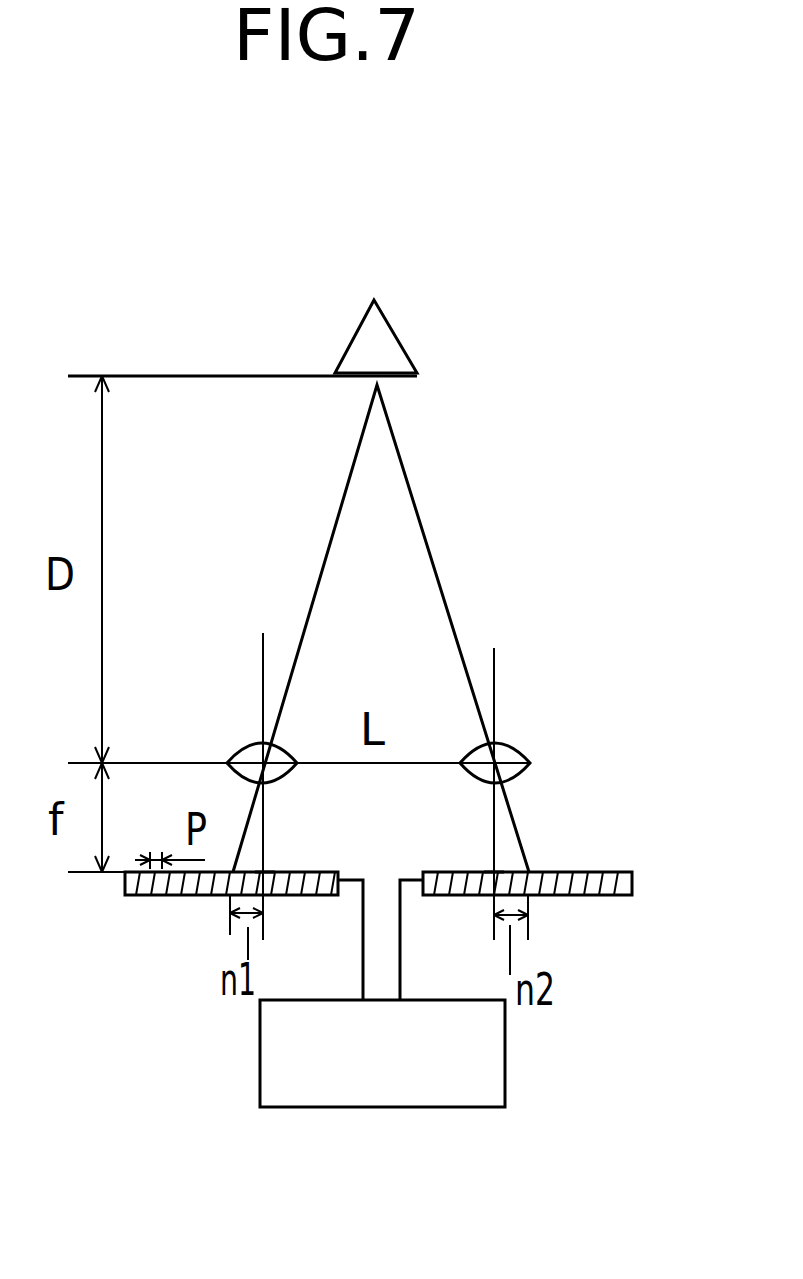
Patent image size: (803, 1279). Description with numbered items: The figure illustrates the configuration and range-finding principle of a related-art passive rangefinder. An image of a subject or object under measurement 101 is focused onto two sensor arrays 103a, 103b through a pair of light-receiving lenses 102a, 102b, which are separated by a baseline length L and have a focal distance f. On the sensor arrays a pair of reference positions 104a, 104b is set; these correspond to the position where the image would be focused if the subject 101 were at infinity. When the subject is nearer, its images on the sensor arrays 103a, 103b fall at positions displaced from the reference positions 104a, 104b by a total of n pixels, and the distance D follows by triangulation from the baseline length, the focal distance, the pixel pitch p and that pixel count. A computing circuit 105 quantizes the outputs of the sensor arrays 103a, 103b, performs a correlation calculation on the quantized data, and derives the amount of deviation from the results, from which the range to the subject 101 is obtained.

The subject 101 is at (396, 332).
The light-receiving lens 102a is at (237, 748).
The light-receiving lens 102b is at (525, 745).
The sensor array 103a is at (298, 895).
The sensor array 103b is at (600, 895).
The reference position 104a is at (265, 867).
The reference position 104b is at (492, 868).
The computing circuit 105 is at (430, 1107).